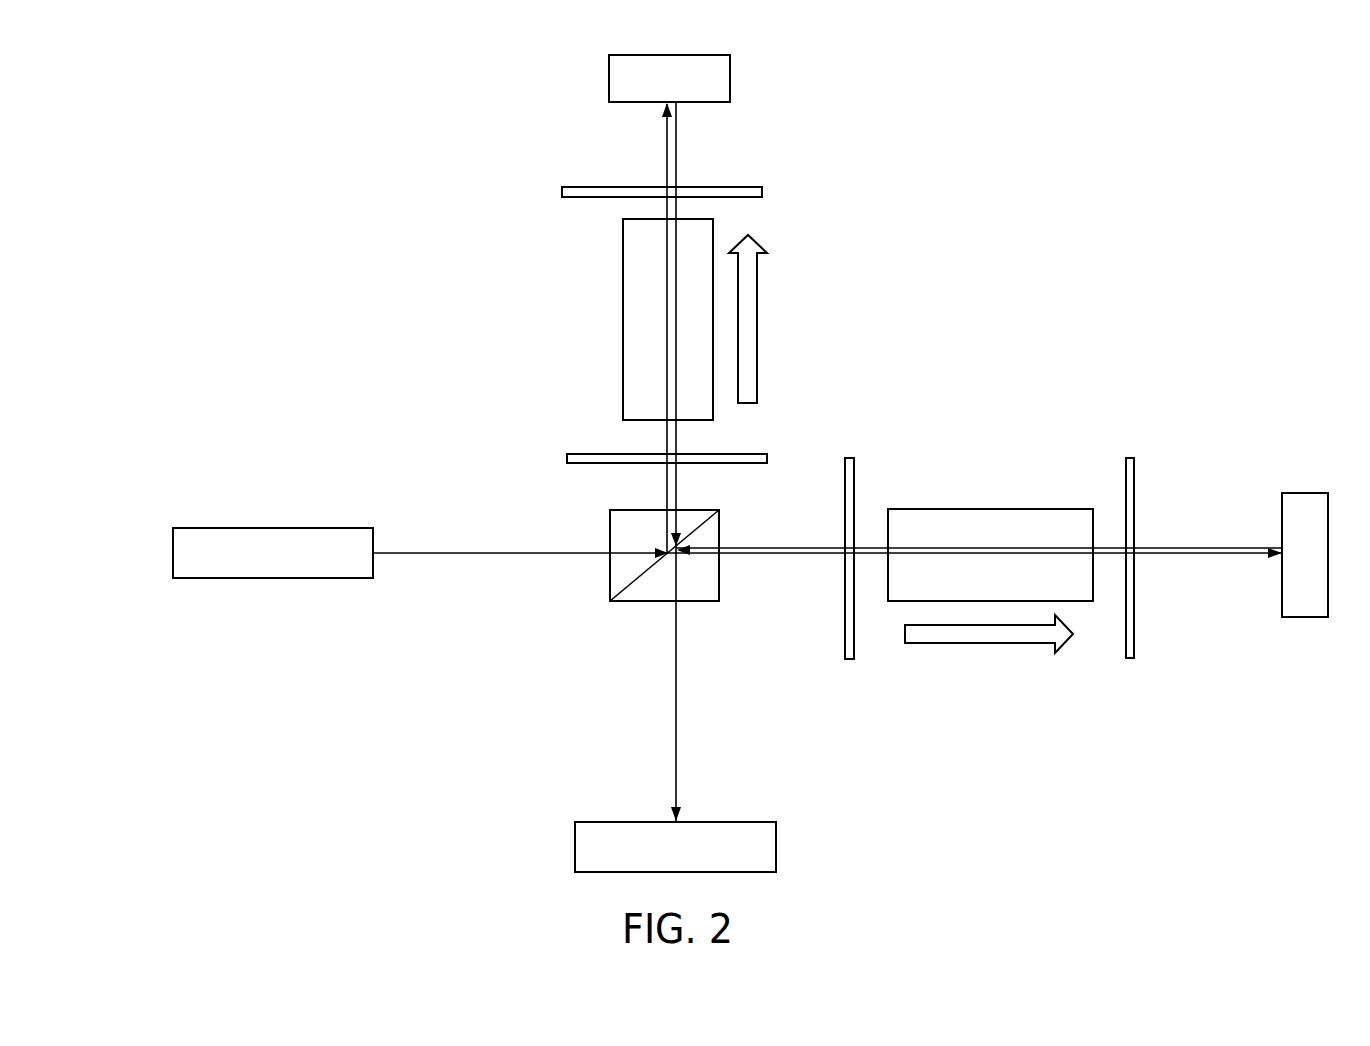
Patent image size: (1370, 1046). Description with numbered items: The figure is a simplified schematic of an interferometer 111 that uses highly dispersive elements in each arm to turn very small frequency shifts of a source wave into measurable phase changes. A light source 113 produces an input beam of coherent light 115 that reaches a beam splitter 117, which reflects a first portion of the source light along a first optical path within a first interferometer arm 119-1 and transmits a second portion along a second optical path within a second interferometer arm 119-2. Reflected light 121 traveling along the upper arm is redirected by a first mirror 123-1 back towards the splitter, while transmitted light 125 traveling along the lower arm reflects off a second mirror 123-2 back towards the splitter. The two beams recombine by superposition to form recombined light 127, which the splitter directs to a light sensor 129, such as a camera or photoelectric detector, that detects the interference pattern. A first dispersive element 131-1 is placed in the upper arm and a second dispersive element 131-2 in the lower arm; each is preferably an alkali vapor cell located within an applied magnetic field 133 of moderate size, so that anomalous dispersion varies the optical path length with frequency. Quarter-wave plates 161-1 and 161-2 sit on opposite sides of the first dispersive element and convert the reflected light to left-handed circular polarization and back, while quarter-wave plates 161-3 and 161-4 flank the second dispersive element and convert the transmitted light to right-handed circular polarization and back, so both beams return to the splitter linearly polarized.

The interferometer 111 is at (345, 818).
The light source 113 is at (292, 564).
The input beam of coherent light 115 is at (470, 556).
The beam splitter 117 is at (645, 603).
The first interferometer arm 119-1 is at (460, 197).
The second interferometer arm 119-2 is at (1226, 368).
The reflected light 121 is at (667, 485).
The first mirror 123-1 is at (702, 91).
The second mirror 123-2 is at (1303, 492).
The transmitted light 125 is at (780, 556).
The recombined light 127 is at (676, 755).
The light sensor 129 is at (695, 857).
The first dispersive element 131-1 is at (622, 334).
The second dispersive element 131-2 is at (992, 509).
The applied magnetic field 133 is at (757, 320).
The quarter-wave plate 161-1 is at (579, 454).
The quarter-wave plate 161-2 is at (739, 187).
The quarter-wave plate 161-3 is at (855, 652).
The quarter-wave plate 161-4 is at (1134, 650).